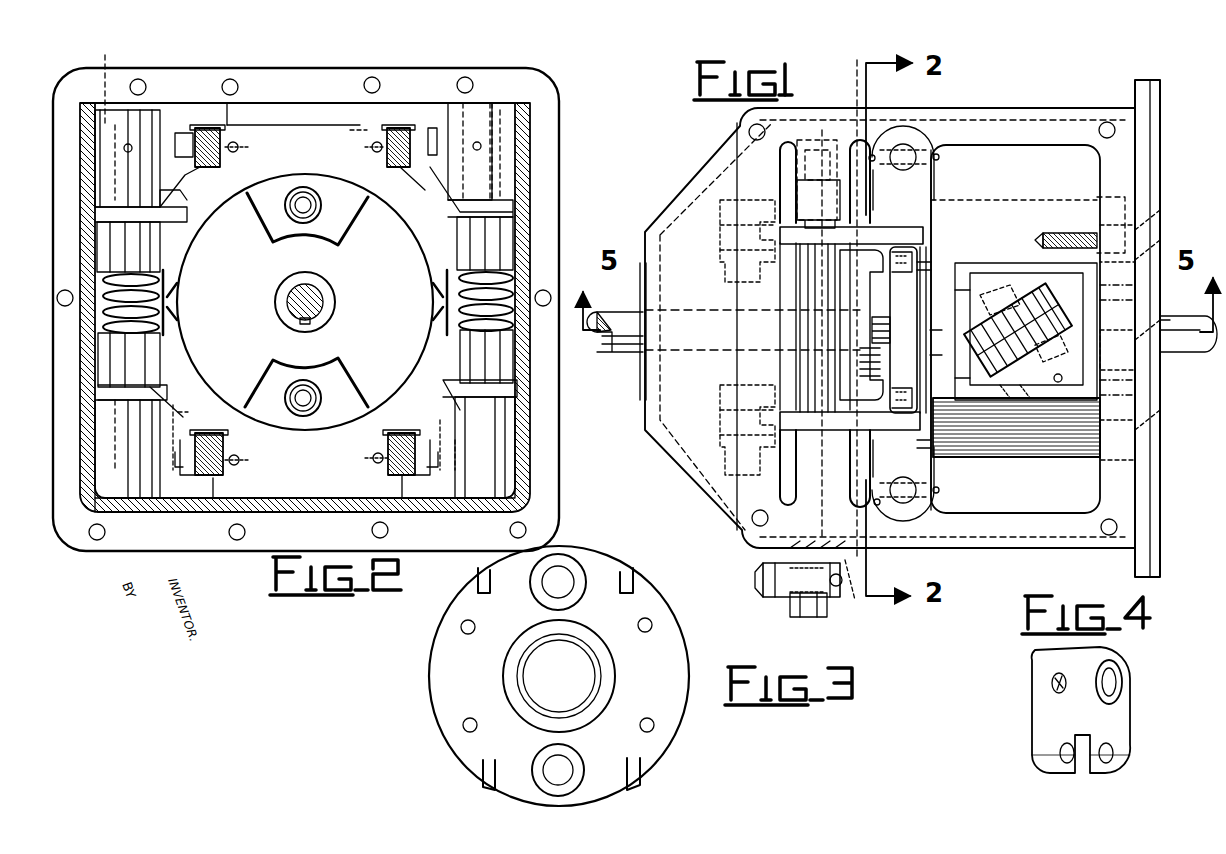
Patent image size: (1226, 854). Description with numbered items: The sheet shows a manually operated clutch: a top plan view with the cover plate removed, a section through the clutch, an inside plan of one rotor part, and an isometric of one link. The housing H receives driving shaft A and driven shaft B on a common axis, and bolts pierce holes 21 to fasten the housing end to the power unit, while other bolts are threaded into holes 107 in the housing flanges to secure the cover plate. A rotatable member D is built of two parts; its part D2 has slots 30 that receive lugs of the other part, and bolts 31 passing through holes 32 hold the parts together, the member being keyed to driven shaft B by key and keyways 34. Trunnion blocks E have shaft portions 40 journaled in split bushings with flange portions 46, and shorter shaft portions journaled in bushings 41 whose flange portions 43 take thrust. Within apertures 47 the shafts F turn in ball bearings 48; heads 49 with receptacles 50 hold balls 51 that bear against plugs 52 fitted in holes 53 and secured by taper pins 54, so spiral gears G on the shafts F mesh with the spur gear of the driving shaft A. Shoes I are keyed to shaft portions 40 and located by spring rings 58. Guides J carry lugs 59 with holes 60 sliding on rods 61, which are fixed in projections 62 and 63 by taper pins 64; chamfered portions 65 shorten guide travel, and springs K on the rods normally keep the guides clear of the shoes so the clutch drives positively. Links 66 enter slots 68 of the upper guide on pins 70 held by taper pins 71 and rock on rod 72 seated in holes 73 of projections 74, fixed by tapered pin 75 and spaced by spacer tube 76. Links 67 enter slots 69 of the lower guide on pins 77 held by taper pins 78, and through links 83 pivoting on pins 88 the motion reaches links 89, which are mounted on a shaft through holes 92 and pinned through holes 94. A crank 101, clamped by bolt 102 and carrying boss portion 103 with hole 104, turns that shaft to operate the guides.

In FIG. 1, the holes 21 is at (1150, 178).
In FIG. 3, the slots 30 is at (486, 580).
In FIG. 1, the bolts 31 is at (1080, 317).
In FIG. 3, the holes 32 is at (462, 726).
In FIG. 2, the key and keyways 34 is at (303, 317).
In FIG. 2, the shaft portions 40 is at (288, 207).
In FIG. 1, the shaft portions 40 is at (860, 327).
In FIG. 3, the bushings 41 is at (565, 580).
In FIG. 1, the flange portions 43 is at (1087, 335).
In FIG. 1, the flange portions 46 is at (965, 303).
In FIG. 1, the apertures 47 is at (1103, 310).
In FIG. 1, the ball bearings 48 is at (1025, 287).
In FIG. 1, the heads 49 is at (1015, 375).
In FIG. 1, the receptacles 50 is at (1038, 375).
In FIG. 1, the balls 51 is at (1050, 380).
In FIG. 1, the plugs 52 is at (1140, 382).
In FIG. 1, the holes 53 is at (1140, 342).
In FIG. 1, the taper pins 54 is at (1060, 380).
In FIG. 2, the spring rings 58 is at (293, 195).
In FIG. 2, the lugs 59 is at (587, 423).
In FIG. 2, the holes 60 is at (603, 458).
In FIG. 2, the rods 61 is at (128, 397).
In FIG. 1, the rods 61 is at (907, 150).
In FIG. 2, the projections 62 is at (500, 175).
In FIG. 1, the projections 62 is at (920, 165).
In FIG. 2, the projections 63 is at (505, 467).
In FIG. 2, the taper pins 64 is at (130, 146).
In FIG. 1, the taper pins 64 is at (872, 161).
In FIG. 2, the chamfered portions 65 is at (177, 288).
In FIG. 2, the links 66 is at (207, 128).
In FIG. 1, the links 66 is at (800, 235).
In FIG. 2, the links 67 is at (402, 473).
In FIG. 2, the slots 68 is at (222, 160).
In FIG. 1, the slots 68 is at (922, 247).
In FIG. 2, the slots 69 is at (210, 433).
In FIG. 2, the pins 70 is at (183, 153).
In FIG. 2, the taper pins 71 is at (240, 150).
In FIG. 1, the taper pins 71 is at (893, 257).
In FIG. 1, the rod 72 is at (843, 585).
In FIG. 1, the holes 73 is at (830, 140).
In FIG. 1, the projections 74 is at (797, 150).
In FIG. 1, the tapered pin 75 is at (825, 183).
In FIG. 1, the spacer tube 76 is at (883, 277).
In FIG. 2, the pins 77 is at (208, 470).
In FIG. 2, the taper pins 78 is at (238, 466).
In FIG. 1, the links 83 is at (718, 213).
In FIG. 1, the pins 88 is at (733, 187).
In FIG. 4, the links 89 is at (1045, 700).
In FIG. 4, the holes 92 is at (1115, 685).
In FIG. 4, the holes 94 is at (1052, 684).
In FIG. 1, the crank 101 is at (850, 595).
In FIG. 1, the bolt 102 is at (764, 585).
In FIG. 1, the enlarged boss portion 103 is at (832, 598).
In FIG. 1, the hole 104 is at (812, 617).
In FIG. 2, the holes 107 is at (304, 308).
In FIG. 1, the holes 107 is at (750, 129).
In FIG. 1, the driving shaft A is at (1185, 335).
In FIG. 2, the driven shaft B is at (318, 293).
In FIG. 1, the driven shaft B is at (630, 322).
In FIG. 1, the rotatable member D is at (962, 176).
In FIG. 1, the part of rotatable member D2 is at (1140, 438).
In FIG. 3, the part of rotatable member D2 is at (648, 742).
In FIG. 1, the trunnion blocks E is at (1077, 277).
In FIG. 1, the shafts F is at (1003, 273).
In FIG. 1, the spiral gears G is at (1052, 287).
In FIG. 1, the housing H is at (1068, 112).
In FIG. 2, the shoes I is at (340, 193).
In FIG. 2, the guides J is at (287, 153).
In FIG. 2, the springs K is at (153, 323).